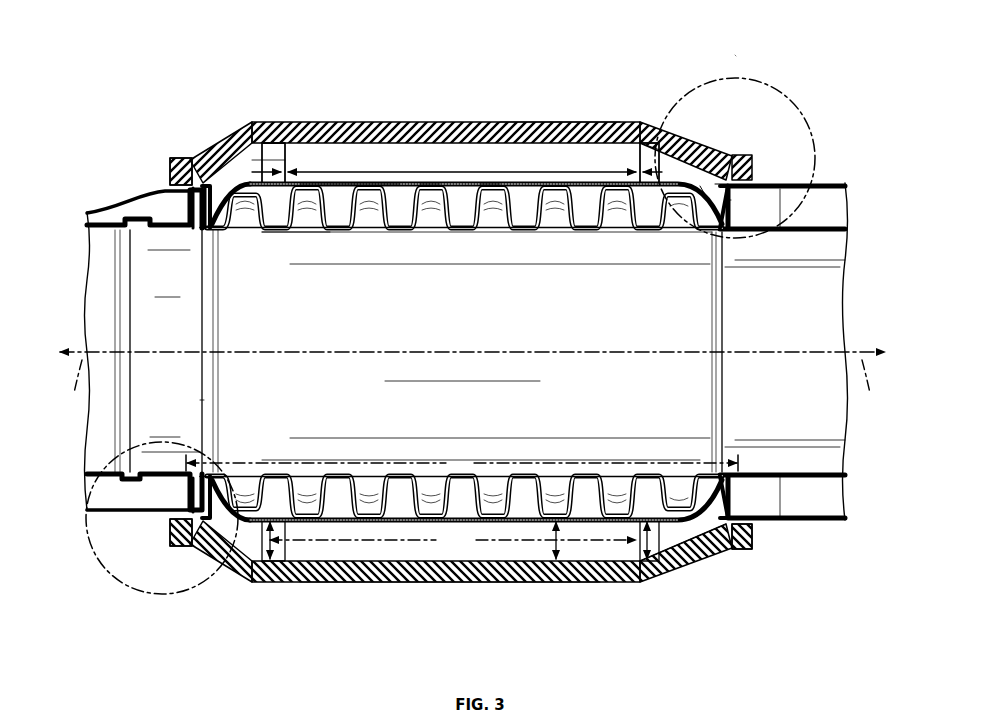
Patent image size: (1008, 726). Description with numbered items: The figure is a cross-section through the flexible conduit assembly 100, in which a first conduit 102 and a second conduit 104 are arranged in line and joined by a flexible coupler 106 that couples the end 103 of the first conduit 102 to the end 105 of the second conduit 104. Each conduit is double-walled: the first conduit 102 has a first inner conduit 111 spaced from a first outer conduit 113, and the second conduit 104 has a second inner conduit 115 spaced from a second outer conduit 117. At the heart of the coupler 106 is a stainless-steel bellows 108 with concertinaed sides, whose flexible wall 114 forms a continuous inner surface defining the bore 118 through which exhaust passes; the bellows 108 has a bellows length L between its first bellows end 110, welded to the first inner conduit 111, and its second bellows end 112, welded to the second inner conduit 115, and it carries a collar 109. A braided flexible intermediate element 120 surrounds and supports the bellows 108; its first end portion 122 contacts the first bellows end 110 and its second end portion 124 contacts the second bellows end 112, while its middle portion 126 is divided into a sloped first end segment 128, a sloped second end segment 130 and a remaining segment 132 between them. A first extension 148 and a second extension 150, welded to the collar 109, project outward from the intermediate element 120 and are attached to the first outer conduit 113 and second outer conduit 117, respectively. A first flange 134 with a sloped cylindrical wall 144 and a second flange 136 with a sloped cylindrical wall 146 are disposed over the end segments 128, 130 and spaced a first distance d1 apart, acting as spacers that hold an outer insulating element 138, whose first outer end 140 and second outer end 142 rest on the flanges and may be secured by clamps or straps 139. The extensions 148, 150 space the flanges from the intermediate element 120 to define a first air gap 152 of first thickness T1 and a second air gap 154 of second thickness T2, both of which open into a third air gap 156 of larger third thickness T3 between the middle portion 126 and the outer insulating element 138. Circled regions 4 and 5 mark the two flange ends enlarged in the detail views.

The flexible conduit assembly 100 is at (736, 53).
The first conduit 102 is at (838, 301).
The end of the first conduit 103 is at (718, 369).
The second conduit 104 is at (145, 307).
The end of the second conduit 105 is at (232, 398).
The coupler 106 is at (412, 114).
The bellows 108 is at (617, 201).
The collar 109 is at (199, 538).
The first bellows end 110 is at (739, 200).
The first inner conduit 111 is at (842, 189).
The second bellows end 112 is at (192, 226).
The first outer conduit 113 is at (846, 181).
The flexible wall 114 is at (320, 233).
The second inner conduit 115 is at (135, 480).
The second outer conduit 117 is at (146, 514).
The bore 118 is at (696, 289).
The flexible intermediate element 120 is at (433, 185).
The first end portion 122 is at (725, 178).
The second end portion 124 is at (195, 186).
The middle portion 126 is at (493, 185).
The first end segment 128 is at (658, 198).
The second end segment 130 is at (212, 200).
The remaining segment 132 is at (354, 181).
The first flange 134 is at (641, 128).
The second flange 136 is at (262, 150).
The outer insulating element 138 is at (568, 121).
The clamps or straps 139 is at (748, 551).
The first outer end 140 is at (781, 113).
The second outer end 142 is at (172, 166).
The wall of the first flange 144 is at (698, 142).
The wall of the second flange 146 is at (238, 162).
The first extension 148 is at (768, 197).
The second extension 150 is at (186, 200).
The first air gap 152 is at (673, 533).
The second air gap 154 is at (252, 533).
The third air gap 156 is at (390, 583).
The detail view 4 is at (808, 116).
The detail view 5 is at (134, 604).
The bellows length L is at (462, 464).
The first distance d1 is at (453, 542).
The first thickness T1 is at (647, 560).
The second thickness T2 is at (270, 560).
The third thickness T3 is at (556, 560).